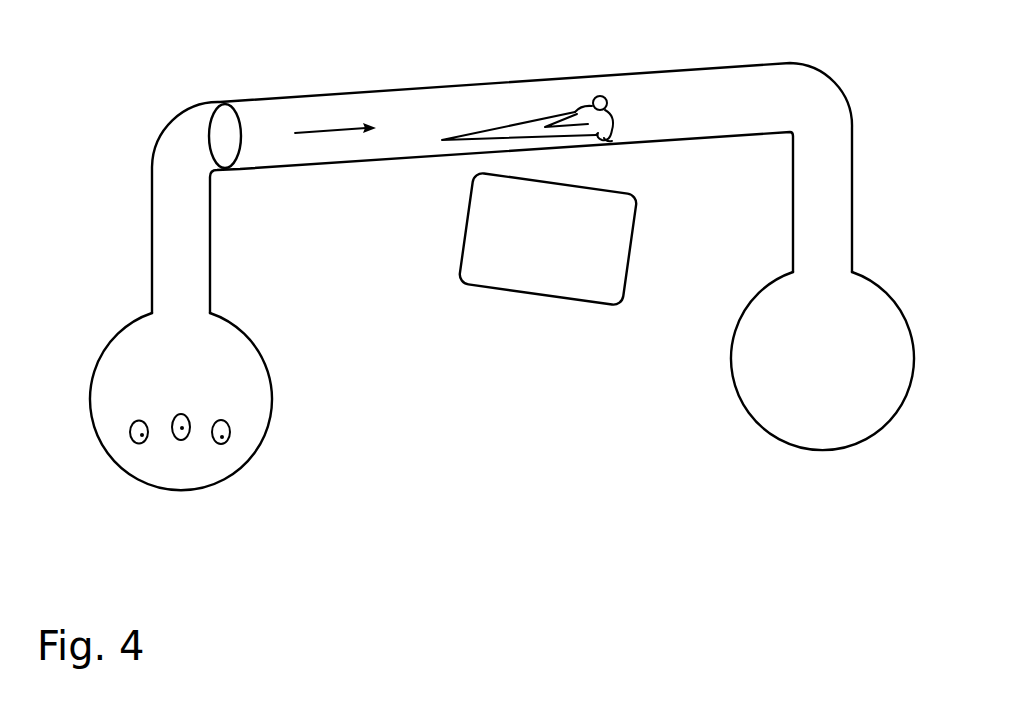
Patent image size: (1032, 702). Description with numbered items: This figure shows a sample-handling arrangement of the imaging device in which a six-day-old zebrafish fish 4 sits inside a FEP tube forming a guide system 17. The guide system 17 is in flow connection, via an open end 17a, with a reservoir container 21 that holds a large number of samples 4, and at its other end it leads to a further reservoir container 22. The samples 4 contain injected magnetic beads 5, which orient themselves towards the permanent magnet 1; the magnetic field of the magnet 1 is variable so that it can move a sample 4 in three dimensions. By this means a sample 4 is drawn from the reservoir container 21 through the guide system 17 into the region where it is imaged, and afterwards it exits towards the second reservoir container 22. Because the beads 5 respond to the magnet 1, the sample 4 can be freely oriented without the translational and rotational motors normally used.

The magnet 1 is at (545, 282).
The sample 4 is at (593, 104).
The magnetic beads 5 is at (622, 136).
The guide system 17 is at (373, 90).
The open end 17a is at (219, 84).
The reservoir container 21 is at (188, 477).
The further reservoir container 22 is at (823, 437).